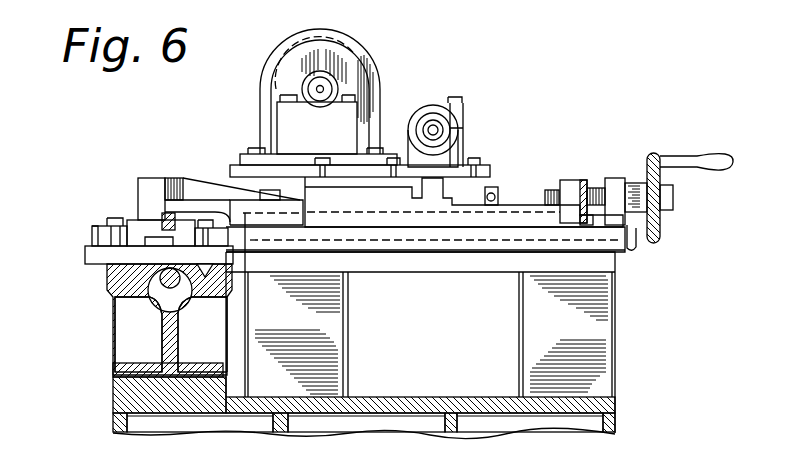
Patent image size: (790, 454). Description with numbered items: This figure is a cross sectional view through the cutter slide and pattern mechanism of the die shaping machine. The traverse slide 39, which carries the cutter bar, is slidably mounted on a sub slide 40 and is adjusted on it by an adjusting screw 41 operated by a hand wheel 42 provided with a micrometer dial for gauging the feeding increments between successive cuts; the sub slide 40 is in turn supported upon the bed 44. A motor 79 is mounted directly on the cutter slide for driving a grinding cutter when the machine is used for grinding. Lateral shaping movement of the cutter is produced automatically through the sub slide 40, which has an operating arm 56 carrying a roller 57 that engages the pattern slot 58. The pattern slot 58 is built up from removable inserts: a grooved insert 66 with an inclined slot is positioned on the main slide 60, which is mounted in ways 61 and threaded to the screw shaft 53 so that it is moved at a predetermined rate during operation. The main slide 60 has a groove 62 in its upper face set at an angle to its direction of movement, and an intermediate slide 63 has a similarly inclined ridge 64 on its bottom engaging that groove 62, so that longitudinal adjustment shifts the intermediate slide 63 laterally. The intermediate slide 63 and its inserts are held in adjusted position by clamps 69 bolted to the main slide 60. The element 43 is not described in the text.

The motor 79 is at (363, 53).
The grooved insert 66 is at (138, 210).
The roller 57 is at (158, 202).
The operating arm 56 is at (210, 195).
The clamps 69 is at (93, 228).
The main slide 60 is at (87, 252).
The pattern slot 58 is at (137, 245).
The intermediate slide 63 is at (143, 249).
The inclined ridge 64 is at (155, 265).
The groove 62 is at (162, 283).
The screw shaft 53 is at (138, 334).
The ways 61 is at (195, 302).
The traverse slide 39 is at (495, 188).
The adjusting screw 41 is at (592, 190).
The hand wheel 42 is at (662, 158).
The stop 43 is at (634, 225).
The sub slide 40 is at (480, 243).
The bed 44 is at (590, 325).